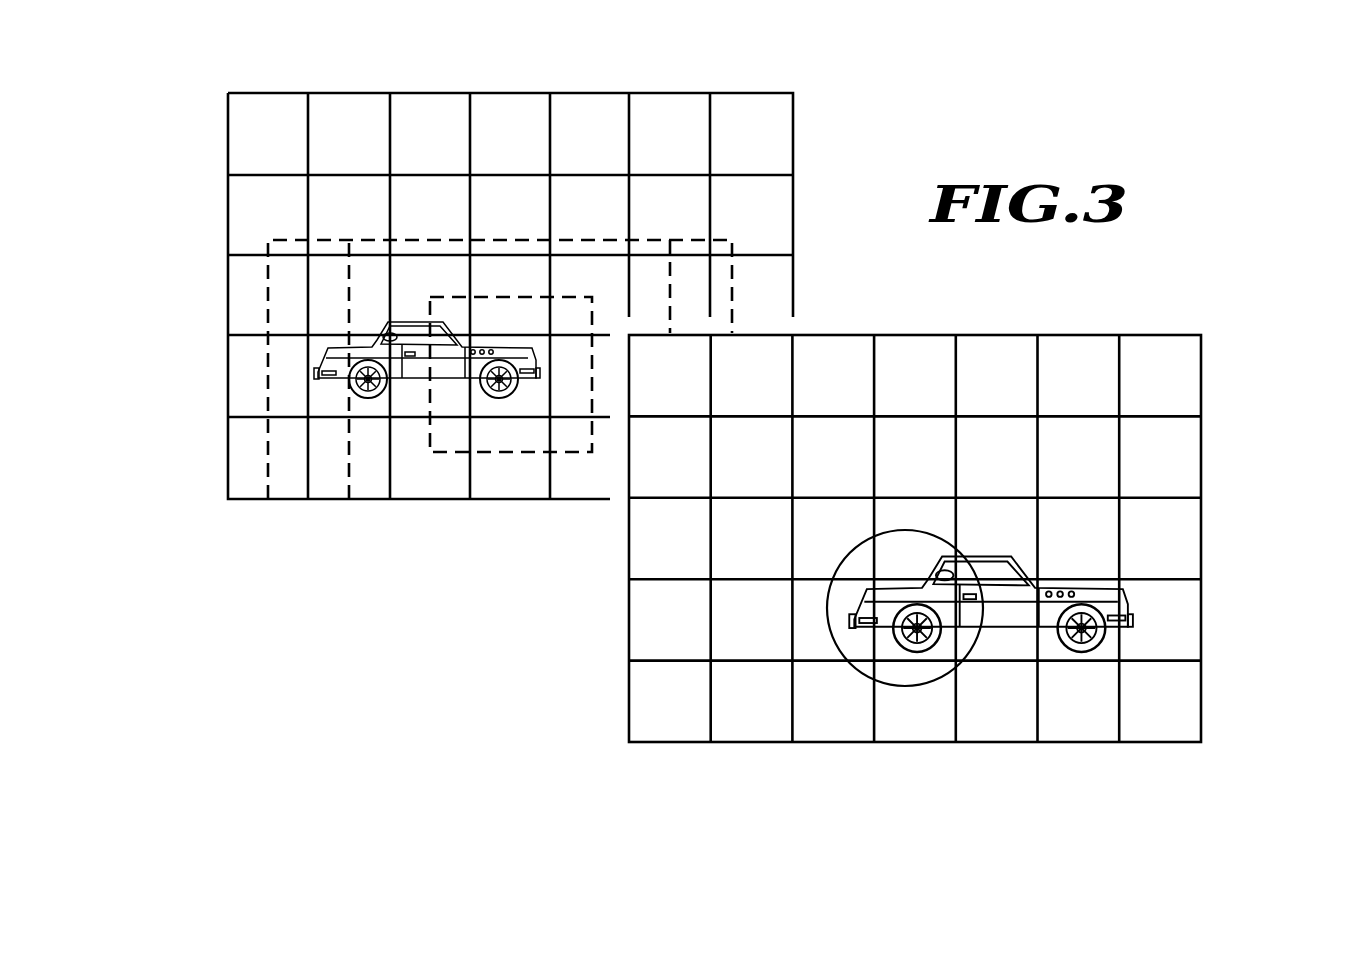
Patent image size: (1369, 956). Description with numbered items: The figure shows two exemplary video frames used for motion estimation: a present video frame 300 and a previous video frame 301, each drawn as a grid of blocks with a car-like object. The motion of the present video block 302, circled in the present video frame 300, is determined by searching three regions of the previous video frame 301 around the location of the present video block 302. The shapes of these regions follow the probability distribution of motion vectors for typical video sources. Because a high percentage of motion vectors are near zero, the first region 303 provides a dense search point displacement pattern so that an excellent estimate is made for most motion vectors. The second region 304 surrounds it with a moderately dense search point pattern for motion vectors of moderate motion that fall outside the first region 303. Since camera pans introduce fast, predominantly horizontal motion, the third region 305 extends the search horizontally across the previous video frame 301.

The present video frame 300 is at (1212, 326).
The previous video frame 301 is at (226, 90).
The present video block 302 is at (892, 687).
The first region 303 is at (515, 453).
The second region 304 is at (368, 488).
The third region 305 is at (287, 382).